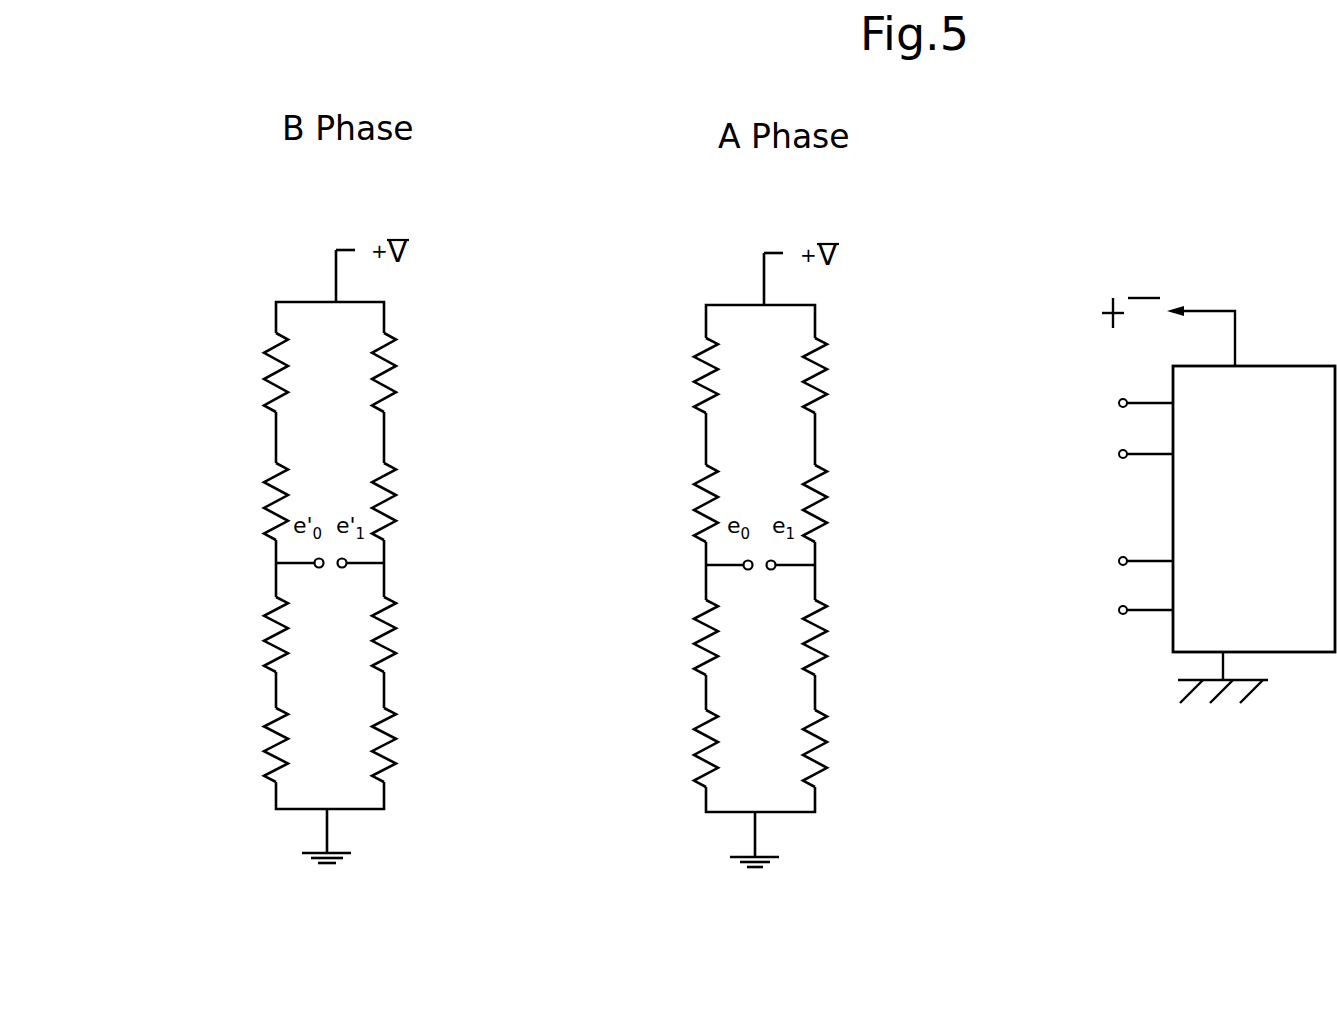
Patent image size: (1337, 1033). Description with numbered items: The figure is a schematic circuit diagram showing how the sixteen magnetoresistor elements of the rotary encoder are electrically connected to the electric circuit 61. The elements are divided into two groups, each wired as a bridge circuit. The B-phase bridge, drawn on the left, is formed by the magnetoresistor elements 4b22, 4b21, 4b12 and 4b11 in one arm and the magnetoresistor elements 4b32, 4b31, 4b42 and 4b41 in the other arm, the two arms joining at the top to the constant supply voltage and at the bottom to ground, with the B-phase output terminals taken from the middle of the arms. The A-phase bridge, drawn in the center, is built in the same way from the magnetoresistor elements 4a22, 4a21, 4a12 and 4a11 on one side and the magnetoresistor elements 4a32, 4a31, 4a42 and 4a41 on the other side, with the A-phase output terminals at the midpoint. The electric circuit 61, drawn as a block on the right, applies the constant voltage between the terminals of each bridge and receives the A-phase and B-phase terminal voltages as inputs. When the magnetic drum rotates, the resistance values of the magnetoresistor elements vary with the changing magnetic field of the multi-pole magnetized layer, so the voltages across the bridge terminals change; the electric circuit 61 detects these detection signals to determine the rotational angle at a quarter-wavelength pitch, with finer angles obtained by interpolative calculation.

The magnetoresistor element 4b22 is at (236, 372).
The magnetoresistor element 4b21 is at (235, 501).
The magnetoresistor element 4b12 is at (235, 634).
The magnetoresistor element 4b11 is at (234, 745).
The magnetoresistor element 4b32 is at (423, 372).
The magnetoresistor element 4b31 is at (421, 501).
The magnetoresistor element 4b42 is at (422, 634).
The magnetoresistor element 4b41 is at (423, 745).
The magnetoresistor element 4a22 is at (670, 375).
The magnetoresistor element 4a21 is at (670, 503).
The magnetoresistor element 4a12 is at (670, 637).
The magnetoresistor element 4a11 is at (670, 748).
The magnetoresistor element 4a32 is at (853, 375).
The magnetoresistor element 4a31 is at (855, 503).
The magnetoresistor element 4a42 is at (857, 637).
The magnetoresistor element 4a41 is at (860, 748).
The electric circuit 61 is at (1295, 366).